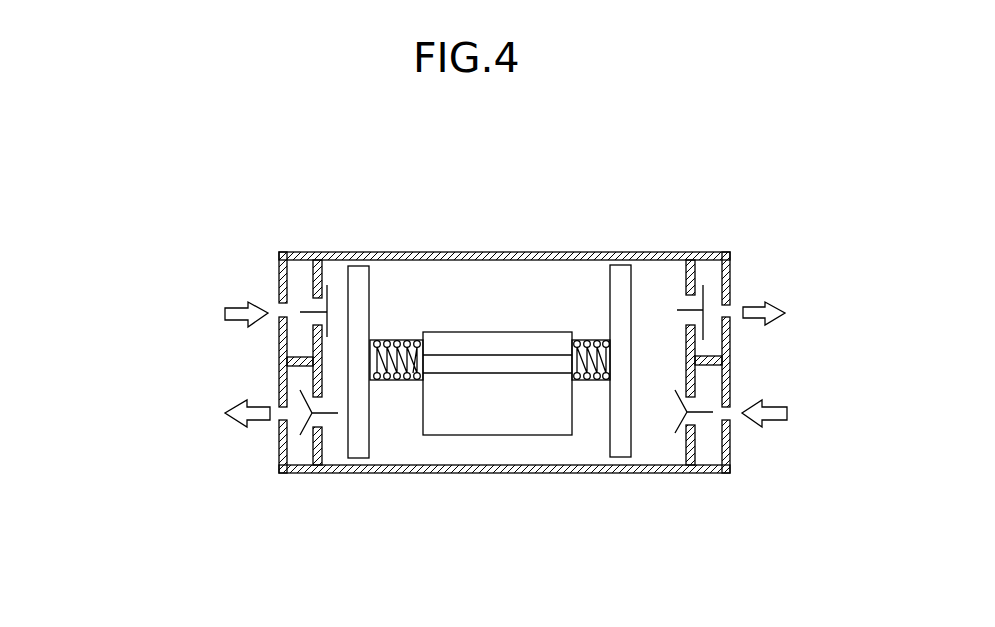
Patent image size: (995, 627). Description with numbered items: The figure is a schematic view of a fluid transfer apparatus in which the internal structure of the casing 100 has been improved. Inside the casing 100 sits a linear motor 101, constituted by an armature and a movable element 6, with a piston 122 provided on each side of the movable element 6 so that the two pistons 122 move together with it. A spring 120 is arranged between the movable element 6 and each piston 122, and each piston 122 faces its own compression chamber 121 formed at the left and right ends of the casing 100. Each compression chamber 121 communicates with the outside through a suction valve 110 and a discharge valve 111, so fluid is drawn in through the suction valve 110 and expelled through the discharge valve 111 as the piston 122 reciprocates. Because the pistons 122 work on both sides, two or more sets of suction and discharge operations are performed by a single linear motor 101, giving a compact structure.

The casing 100 is at (560, 252).
The linear motor 101 is at (480, 332).
The movable element 6 is at (448, 353).
The spring 120 is at (387, 382).
The compression chamber 121 is at (335, 290).
The piston 122 is at (621, 272).
The suction valve 110 is at (300, 310).
The discharge valve 111 is at (703, 305).